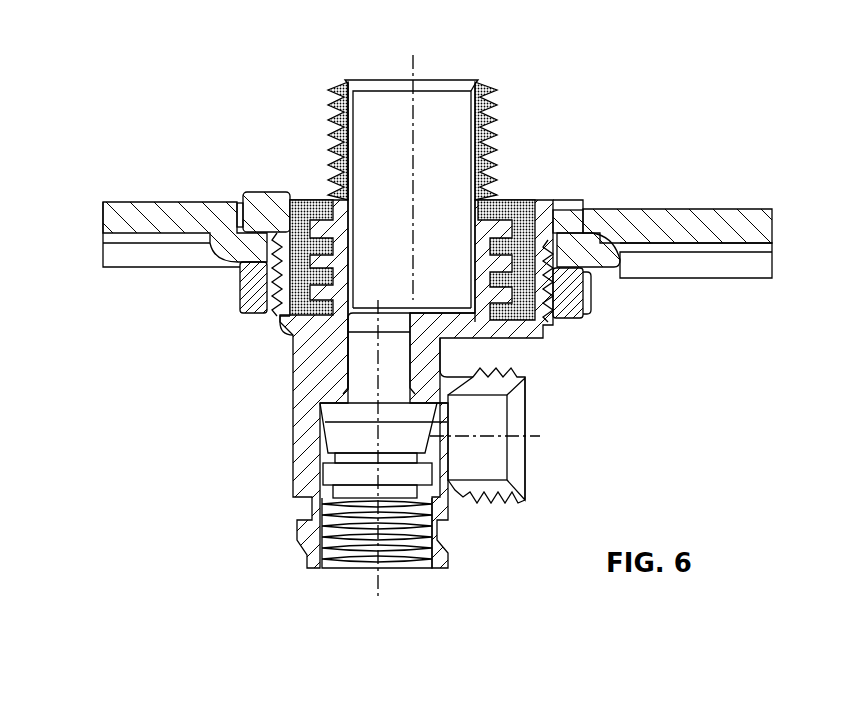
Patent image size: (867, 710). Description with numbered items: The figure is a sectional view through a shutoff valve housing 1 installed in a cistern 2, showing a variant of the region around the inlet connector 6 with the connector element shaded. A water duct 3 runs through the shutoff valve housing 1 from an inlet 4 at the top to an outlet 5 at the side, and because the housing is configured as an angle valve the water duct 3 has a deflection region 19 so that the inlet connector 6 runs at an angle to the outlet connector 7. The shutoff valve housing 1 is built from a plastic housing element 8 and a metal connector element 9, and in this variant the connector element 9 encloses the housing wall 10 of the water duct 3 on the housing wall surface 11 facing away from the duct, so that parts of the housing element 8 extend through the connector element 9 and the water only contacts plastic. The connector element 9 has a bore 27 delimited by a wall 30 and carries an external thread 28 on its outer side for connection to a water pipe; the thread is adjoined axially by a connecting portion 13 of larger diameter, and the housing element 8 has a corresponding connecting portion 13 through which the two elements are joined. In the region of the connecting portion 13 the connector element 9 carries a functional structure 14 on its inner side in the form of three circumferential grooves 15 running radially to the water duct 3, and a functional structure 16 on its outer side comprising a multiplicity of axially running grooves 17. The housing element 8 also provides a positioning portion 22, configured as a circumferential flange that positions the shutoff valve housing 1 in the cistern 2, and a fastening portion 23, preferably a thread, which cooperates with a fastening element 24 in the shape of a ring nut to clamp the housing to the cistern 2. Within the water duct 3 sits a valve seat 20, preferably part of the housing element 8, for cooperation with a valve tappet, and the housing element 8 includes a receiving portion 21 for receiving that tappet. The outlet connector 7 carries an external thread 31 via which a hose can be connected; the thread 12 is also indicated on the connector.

The shutoff valve housing 1 is at (293, 403).
The cistern 2 is at (710, 233).
The water duct 3 is at (388, 258).
The inlet 4 is at (440, 80).
The outlet 5 is at (527, 443).
The inlet connector 6 is at (330, 115).
The outlet connector 7 is at (495, 503).
The housing element 8 is at (345, 360).
The connector element 9 is at (297, 218).
The housing wall 10 is at (473, 177).
The housing wall surface 11 is at (502, 278).
The thread 12 is at (475, 148).
The connecting portion 13 is at (581, 305).
The functional structure 14 is at (555, 232).
The grooves 15 is at (537, 250).
The functional structure 16 is at (288, 270).
The grooves 17 is at (260, 275).
The deflection region 19 is at (397, 443).
The valve seat 20 is at (325, 415).
The receiving portion 21 is at (410, 555).
The positioning portion 22 is at (237, 210).
The fastening portion 23 is at (245, 312).
The fastening element 24 is at (586, 315).
The bore 27 is at (383, 138).
The external thread 28 is at (330, 147).
The wall 30 is at (480, 100).
The external thread 31 is at (483, 503).